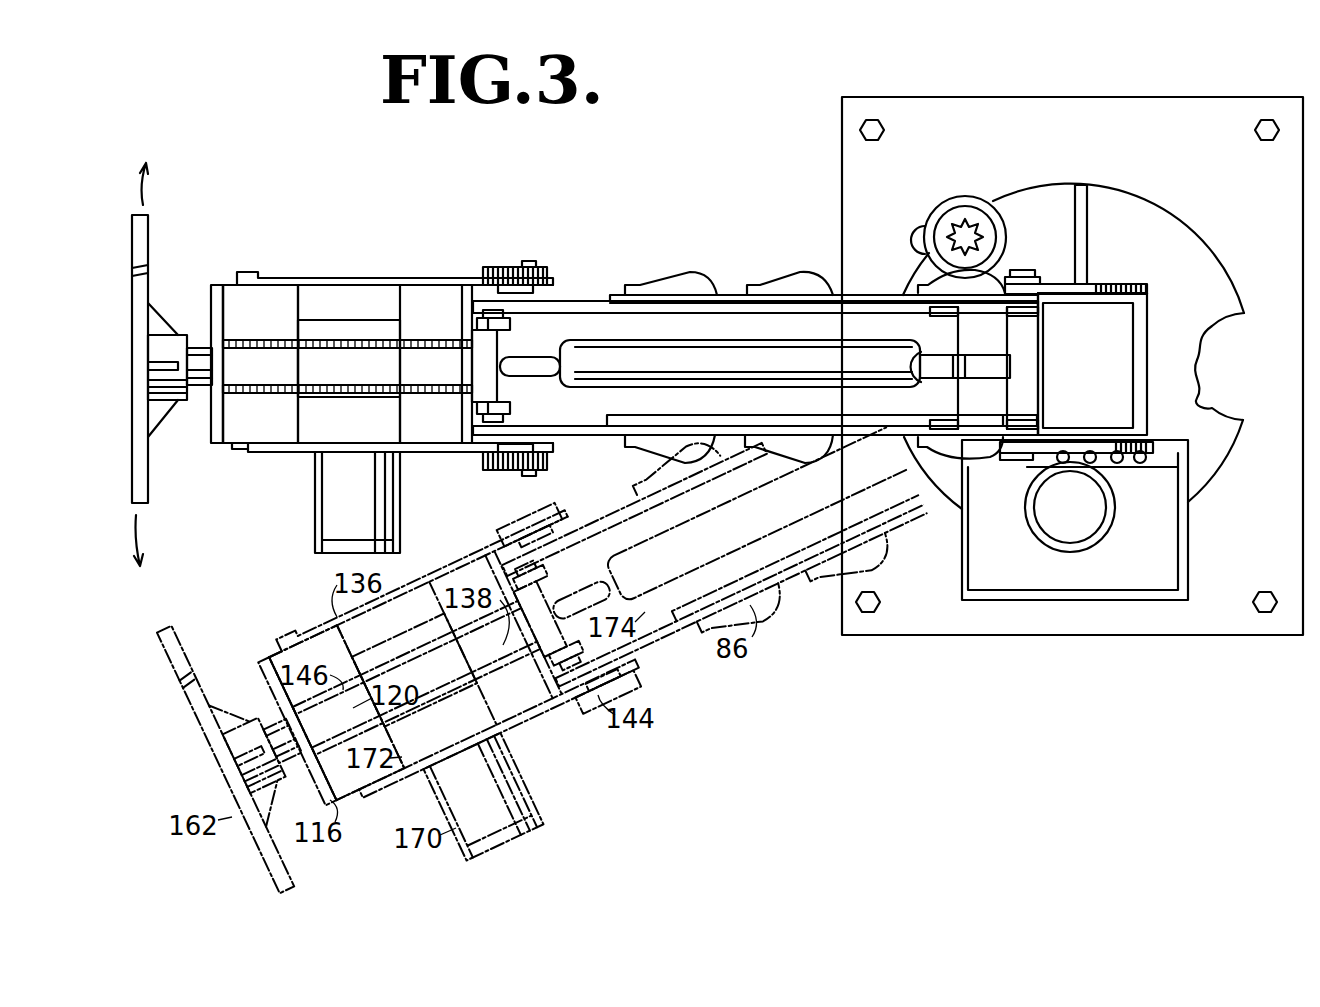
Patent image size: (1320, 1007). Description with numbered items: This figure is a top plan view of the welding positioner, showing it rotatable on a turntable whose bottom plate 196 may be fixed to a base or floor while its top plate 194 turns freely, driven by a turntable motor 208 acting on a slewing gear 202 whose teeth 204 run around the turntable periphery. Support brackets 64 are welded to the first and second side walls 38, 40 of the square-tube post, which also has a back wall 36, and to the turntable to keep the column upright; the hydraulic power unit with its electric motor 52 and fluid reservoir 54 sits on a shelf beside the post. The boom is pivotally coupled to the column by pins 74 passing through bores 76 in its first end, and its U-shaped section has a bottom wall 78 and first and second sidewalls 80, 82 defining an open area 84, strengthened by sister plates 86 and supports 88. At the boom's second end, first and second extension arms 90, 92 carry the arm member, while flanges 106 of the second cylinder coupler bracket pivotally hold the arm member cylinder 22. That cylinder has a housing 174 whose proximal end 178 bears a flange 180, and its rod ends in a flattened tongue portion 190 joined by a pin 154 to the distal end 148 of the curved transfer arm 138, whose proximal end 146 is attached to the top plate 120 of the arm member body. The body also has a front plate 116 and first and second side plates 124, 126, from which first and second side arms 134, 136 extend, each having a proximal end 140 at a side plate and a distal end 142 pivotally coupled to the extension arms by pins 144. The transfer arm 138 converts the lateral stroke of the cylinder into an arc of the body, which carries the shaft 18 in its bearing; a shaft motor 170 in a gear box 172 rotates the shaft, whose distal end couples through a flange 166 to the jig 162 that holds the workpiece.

The shaft 18 is at (189, 340).
The arm member cylinder 22 is at (740, 380).
The back wall 36 is at (1113, 364).
The first side wall 38 is at (1079, 472).
The second side wall 40 is at (1076, 272).
The electric motor 52 is at (1087, 509).
The fluid reservoir 54 is at (1075, 536).
The support brackets 64 is at (1102, 217).
The pins 74 is at (1009, 357).
The bores 76 is at (1054, 402).
The bottom wall 78 is at (824, 287).
The first sidewall 80 is at (822, 443).
The second sidewall 82 is at (790, 279).
The open area 84 is at (655, 406).
The sister plates 86 is at (729, 357).
The supports 88 is at (670, 273).
The first extension arm 90 is at (755, 452).
The second extension arm 92 is at (755, 289).
The flanges 106 is at (1041, 364).
The front plate 116 is at (206, 389).
The top plate 120 is at (347, 366).
The first side plate 124 is at (228, 404).
The second side plate 126 is at (389, 331).
The first side arm 134 is at (422, 450).
The second side arm 136 is at (388, 339).
The transfer arm 138 is at (431, 364).
The proximal end 140 is at (277, 364).
The distal end 142 is at (550, 361).
The pins 144 is at (502, 367).
The proximal end 146 is at (260, 364).
The distal end 148 is at (529, 369).
The pin 154 is at (533, 346).
The jig 162 is at (110, 359).
The flange 166 is at (175, 376).
The shaft motor 170 is at (327, 506).
The gear box 172 is at (328, 378).
The housing 174 is at (745, 334).
The proximal end 178 is at (890, 349).
The flange 180 is at (979, 368).
The flattened tongue portion 190 is at (461, 369).
The top plate 194 is at (1073, 342).
The bottom plate 196 is at (1072, 349).
The slewing gear 202 is at (1238, 336).
The teeth 204 is at (1237, 390).
The turntable motor 208 is at (958, 228).